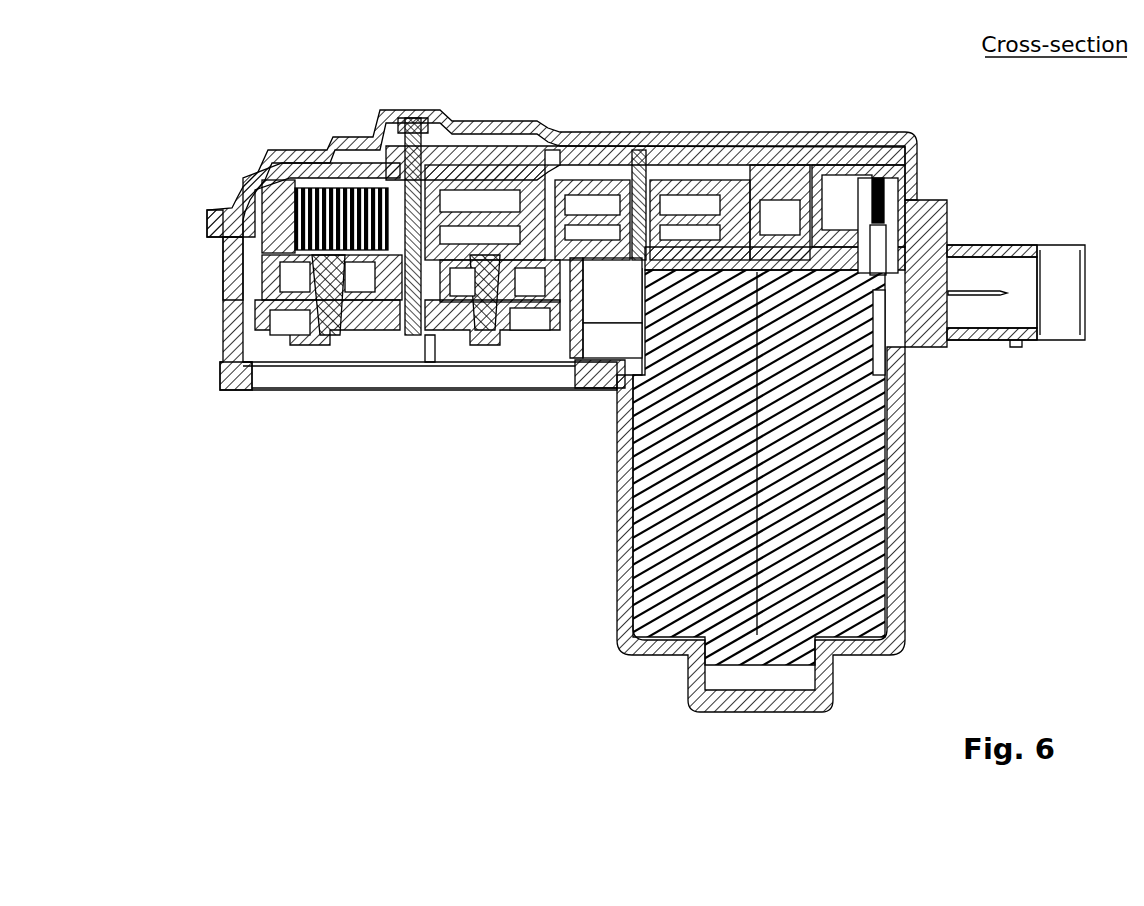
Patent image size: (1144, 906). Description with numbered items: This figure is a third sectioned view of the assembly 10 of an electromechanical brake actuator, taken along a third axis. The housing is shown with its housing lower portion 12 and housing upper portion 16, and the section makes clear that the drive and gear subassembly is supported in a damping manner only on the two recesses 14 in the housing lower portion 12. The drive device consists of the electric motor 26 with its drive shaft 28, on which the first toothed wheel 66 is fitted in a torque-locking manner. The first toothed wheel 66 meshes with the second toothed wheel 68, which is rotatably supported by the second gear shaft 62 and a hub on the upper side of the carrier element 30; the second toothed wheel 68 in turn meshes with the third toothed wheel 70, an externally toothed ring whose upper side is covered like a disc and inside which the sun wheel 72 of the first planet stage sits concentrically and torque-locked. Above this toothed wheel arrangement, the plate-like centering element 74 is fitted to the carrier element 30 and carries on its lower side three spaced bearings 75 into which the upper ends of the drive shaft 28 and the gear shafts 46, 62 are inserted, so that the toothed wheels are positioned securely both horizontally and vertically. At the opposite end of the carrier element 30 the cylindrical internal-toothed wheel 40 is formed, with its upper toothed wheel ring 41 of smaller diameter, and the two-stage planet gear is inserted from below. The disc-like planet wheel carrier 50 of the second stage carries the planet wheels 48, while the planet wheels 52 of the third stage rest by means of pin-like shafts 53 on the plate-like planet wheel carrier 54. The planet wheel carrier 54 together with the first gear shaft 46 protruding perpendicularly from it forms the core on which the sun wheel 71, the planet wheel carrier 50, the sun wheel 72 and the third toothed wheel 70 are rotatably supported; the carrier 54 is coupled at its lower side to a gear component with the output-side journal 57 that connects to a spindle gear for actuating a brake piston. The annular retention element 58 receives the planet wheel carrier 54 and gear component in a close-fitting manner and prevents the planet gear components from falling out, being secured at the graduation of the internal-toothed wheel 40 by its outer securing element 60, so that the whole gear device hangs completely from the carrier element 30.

The assembly 10 is at (778, 768).
The housing lower portion 12 is at (905, 600).
The recesses 14 is at (600, 318).
The housing upper portion 16 is at (917, 168).
The electric motor 26 is at (847, 550).
The drive shaft 28 is at (762, 152).
The carrier element 30 is at (520, 300).
The internal-toothed wheel 40 is at (207, 208).
The toothed wheel ring 41 is at (330, 155).
The first gear shaft 46 is at (410, 124).
The planet wheels 48 is at (290, 156).
The planet wheel carrier 50 is at (320, 330).
The planet wheels 52 is at (223, 267).
The pin-like shafts 53 is at (503, 300).
The planet wheel carrier 54 is at (292, 310).
The output-side journal 57 is at (395, 366).
The retention element 58 is at (222, 322).
The securing element 60 is at (210, 240).
The second gear shaft 62 is at (635, 170).
The first toothed wheel 66 is at (820, 152).
The second toothed wheel 68 is at (650, 152).
The third toothed wheel 70 is at (540, 135).
The sun wheel 71 is at (443, 313).
The sun wheel 72 is at (460, 125).
The centering element 74 is at (720, 152).
The bearings 75 is at (428, 118).